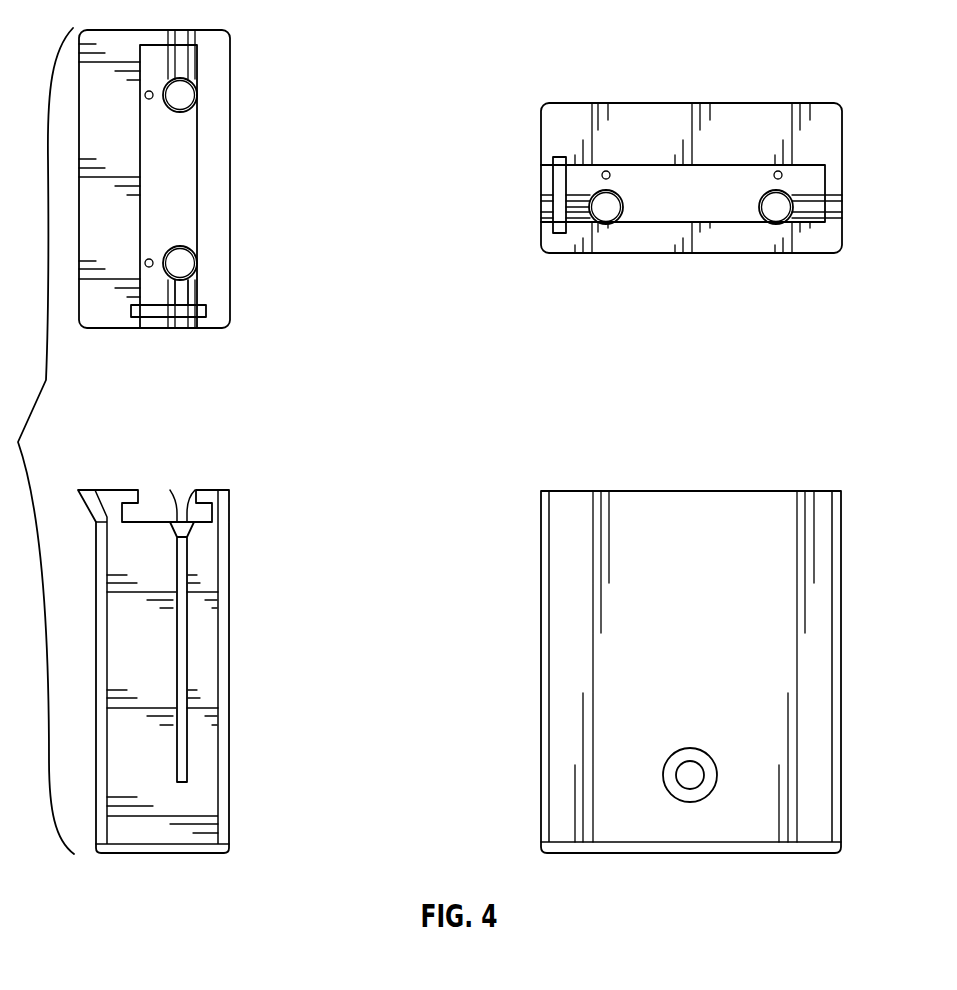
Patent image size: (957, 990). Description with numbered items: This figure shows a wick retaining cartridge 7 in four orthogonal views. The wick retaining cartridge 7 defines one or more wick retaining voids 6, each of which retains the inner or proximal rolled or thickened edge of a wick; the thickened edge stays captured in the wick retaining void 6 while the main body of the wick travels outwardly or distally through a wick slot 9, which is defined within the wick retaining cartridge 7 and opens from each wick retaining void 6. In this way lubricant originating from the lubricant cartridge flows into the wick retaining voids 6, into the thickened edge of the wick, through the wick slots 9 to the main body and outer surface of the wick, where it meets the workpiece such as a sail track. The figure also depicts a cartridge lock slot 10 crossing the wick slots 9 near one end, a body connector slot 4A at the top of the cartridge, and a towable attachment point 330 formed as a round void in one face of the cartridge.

The wick retaining cartridge 7 is at (230, 62).
The wick retaining void 6 is at (198, 93).
The wick slot 9 is at (182, 321).
The cartridge lock slot 10 is at (131, 309).
The body connector slot 4A is at (140, 500).
The towable attachment point 330 is at (690, 748).